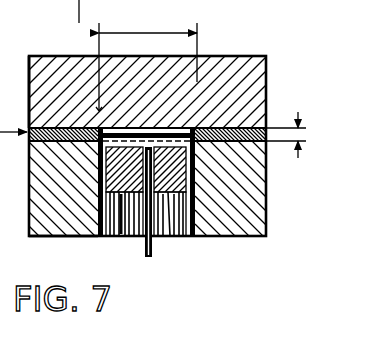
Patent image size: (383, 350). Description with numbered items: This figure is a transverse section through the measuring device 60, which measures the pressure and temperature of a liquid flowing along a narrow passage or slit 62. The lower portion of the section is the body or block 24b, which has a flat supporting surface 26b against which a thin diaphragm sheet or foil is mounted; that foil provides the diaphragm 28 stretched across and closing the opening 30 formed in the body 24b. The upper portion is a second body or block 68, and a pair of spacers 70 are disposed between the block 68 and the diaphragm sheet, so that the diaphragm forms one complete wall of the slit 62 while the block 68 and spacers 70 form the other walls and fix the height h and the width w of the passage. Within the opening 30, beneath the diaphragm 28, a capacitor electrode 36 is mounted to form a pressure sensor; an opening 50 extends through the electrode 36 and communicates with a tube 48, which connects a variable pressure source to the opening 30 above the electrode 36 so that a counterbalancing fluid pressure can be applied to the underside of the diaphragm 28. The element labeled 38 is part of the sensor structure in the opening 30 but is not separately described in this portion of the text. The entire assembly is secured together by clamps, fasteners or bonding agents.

The measuring device 60 is at (258, 52).
The second body or block 68 is at (254, 76).
The spacers 70 is at (252, 150).
The diaphragm 28 is at (142, 122).
The body or block 24b is at (242, 202).
The flat supporting surface 26b is at (29, 104).
The passage or slit 62 is at (177, 113).
The opening 30 is at (64, 237).
The opening 50 is at (128, 236).
The insert 38 is at (190, 237).
The capacitor electrode 36 is at (170, 237).
The tube 48 is at (157, 244).
The width w is at (146, 59).
The height h is at (295, 135).